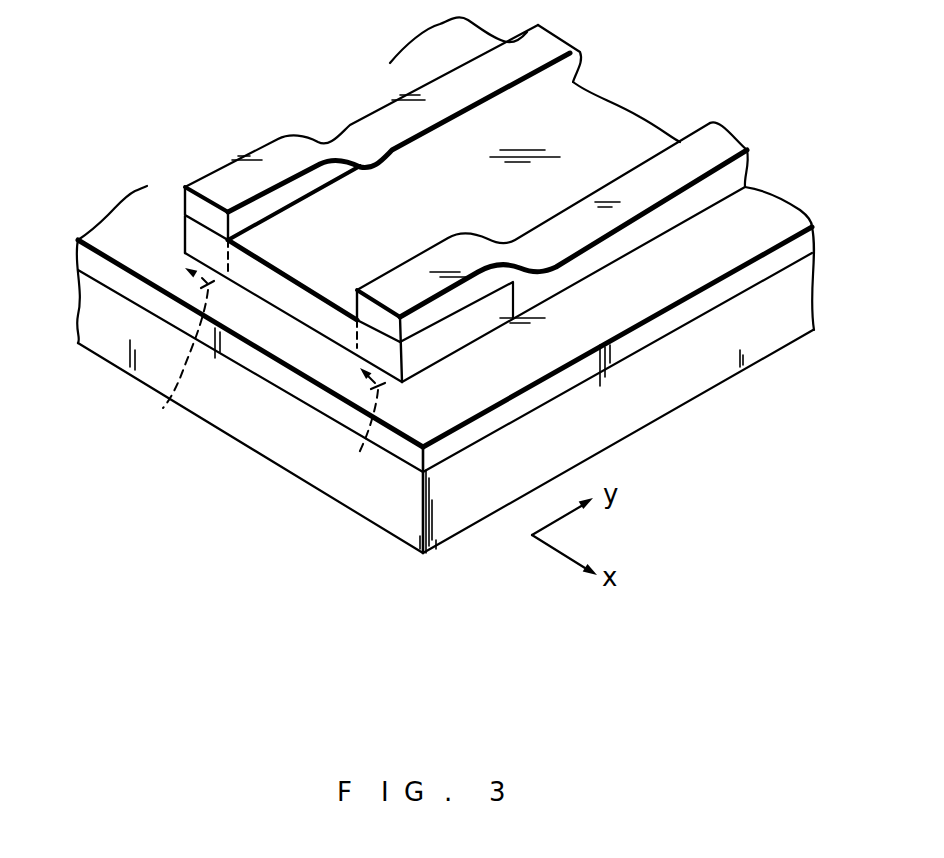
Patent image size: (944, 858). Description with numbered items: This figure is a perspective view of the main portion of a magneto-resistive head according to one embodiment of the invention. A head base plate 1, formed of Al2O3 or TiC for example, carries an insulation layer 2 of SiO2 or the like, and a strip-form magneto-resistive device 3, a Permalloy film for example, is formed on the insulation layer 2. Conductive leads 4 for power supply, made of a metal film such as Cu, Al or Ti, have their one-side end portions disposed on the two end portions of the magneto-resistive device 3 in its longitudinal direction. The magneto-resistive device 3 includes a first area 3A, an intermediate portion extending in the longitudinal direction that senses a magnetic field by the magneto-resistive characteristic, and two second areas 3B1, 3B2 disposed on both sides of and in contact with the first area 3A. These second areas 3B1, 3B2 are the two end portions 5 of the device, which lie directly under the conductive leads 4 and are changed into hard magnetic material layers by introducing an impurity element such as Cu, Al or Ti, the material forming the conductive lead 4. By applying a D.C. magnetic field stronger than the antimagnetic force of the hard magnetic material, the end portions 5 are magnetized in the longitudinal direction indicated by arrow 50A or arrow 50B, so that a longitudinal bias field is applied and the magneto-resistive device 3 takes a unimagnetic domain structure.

The head base plate 1 is at (692, 382).
The insulation layer 2 is at (755, 276).
The magneto-resistive device 3 is at (445, 218).
The first area 3A is at (283, 300).
The second area 3B1 is at (206, 231).
The second area 3B2 is at (379, 336).
The conductive lead 4 is at (547, 43).
The end portion 5 is at (302, 277).
The arrow 50A is at (204, 238).
The arrow 50B is at (252, 375).